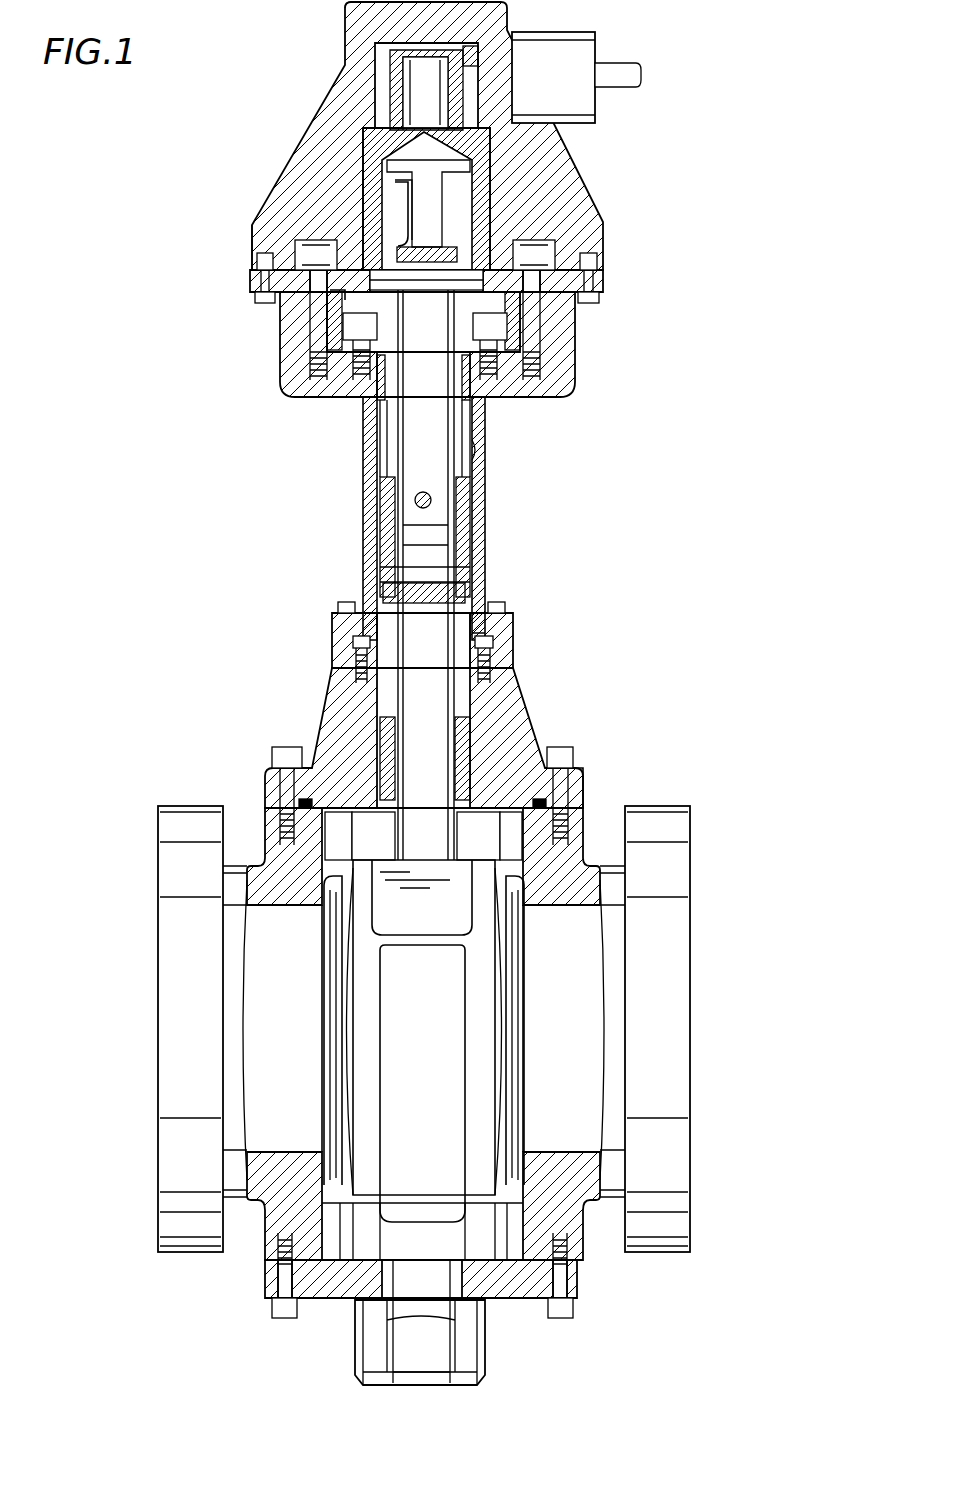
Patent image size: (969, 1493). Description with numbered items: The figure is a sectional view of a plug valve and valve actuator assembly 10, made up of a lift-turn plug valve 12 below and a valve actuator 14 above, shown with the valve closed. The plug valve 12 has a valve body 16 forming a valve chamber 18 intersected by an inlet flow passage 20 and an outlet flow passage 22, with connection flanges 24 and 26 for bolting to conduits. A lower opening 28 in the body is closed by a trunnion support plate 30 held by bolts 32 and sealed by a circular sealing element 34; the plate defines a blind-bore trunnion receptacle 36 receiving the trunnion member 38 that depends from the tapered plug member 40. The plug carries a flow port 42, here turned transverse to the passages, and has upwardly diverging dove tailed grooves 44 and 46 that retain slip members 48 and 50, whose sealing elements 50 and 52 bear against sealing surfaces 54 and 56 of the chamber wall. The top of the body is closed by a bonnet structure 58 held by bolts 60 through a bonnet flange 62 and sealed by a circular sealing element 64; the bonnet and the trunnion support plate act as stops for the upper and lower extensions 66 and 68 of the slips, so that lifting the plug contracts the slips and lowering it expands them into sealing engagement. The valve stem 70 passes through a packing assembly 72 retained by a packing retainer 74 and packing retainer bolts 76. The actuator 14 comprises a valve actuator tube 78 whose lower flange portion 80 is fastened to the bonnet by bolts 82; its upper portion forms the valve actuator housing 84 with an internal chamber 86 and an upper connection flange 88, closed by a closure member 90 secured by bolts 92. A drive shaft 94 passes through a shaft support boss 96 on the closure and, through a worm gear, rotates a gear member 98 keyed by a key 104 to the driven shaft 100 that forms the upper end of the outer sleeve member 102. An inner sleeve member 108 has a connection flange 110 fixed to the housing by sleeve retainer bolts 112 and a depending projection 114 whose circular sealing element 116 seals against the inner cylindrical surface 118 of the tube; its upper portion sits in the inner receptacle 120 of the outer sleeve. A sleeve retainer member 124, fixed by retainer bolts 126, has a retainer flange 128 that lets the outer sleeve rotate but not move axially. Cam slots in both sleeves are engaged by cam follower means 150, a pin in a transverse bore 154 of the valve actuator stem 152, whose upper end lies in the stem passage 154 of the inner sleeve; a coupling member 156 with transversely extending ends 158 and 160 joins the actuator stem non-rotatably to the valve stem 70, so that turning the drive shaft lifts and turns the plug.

The plug valve and valve actuator assembly 10 is at (170, 311).
The plug valve 12 is at (692, 724).
The valve actuator 14 is at (260, 34).
The valve body 16 is at (287, 1220).
The valve chamber 18 is at (560, 790).
The inlet flow passage 20 is at (245, 1145).
The outlet flow passage 22 is at (590, 1148).
The connection flange 24 is at (165, 852).
The connection flange 26 is at (645, 855).
The lower opening 28 is at (333, 1265).
The trunnion support plate 30 is at (535, 1295).
The bolts 32 is at (578, 1310).
The circular sealing element 34 is at (550, 1250).
The trunnion receptacle 36 is at (362, 1382).
The trunnion member 38 is at (425, 1295).
The tapered plug member 40 is at (480, 1262).
The flow port 42 is at (411, 1082).
The dove tailed groove 44 is at (360, 1213).
The dove tailed groove 46 is at (478, 1235).
The slip member 48 is at (340, 990).
The slip member / sealing element 50 is at (518, 985).
The sealing element 52 is at (497, 1038).
The sealing surface 54 is at (318, 922).
The sealing surface 56 is at (528, 928).
The bonnet structure 58 is at (505, 706).
The bolts 60 is at (562, 756).
The bonnet flange 62 is at (588, 800).
The circular sealing element 64 is at (286, 806).
The upper extension 66 is at (332, 803).
The lower extension 68 is at (345, 1265).
The valve stem 70 is at (432, 626).
The packing assembly 72 is at (478, 744).
The packing retainer 74 is at (466, 678).
The packing retainer bolts 76 is at (492, 633).
The valve actuator tube 78 is at (368, 505).
The lower flange portion 80 is at (333, 637).
The bolts 82 is at (340, 608).
The valve actuator housing 84 is at (562, 370).
The internal chamber 86 is at (310, 325).
The upper connection flange 88 is at (590, 282).
The closure member 90 is at (558, 187).
The bolts 92 is at (598, 300).
The drive shaft 94 is at (645, 75).
The shaft support boss 96 is at (572, 47).
The gear member 98 is at (470, 45).
The driven shaft 100 is at (420, 108).
The outer sleeve member 102 is at (378, 155).
The key 104 is at (365, 72).
The inner sleeve member 108 is at (470, 185).
The connection flange 110 is at (355, 392).
The sleeve retainer bolts 112 is at (535, 392).
The depending projection 114 is at (368, 400).
The circular sealing element 116 is at (492, 397).
The inner cylindrical surface 118 is at (478, 452).
The inner receptacle 120 is at (378, 246).
The sleeve retainer member 124 is at (545, 322).
The retainer bolts 126 is at (312, 352).
The retainer flange 128 is at (545, 272).
The cam follower means 150 is at (500, 250).
The valve actuator stem 152 is at (410, 448).
The internal stem passage / transverse bore 154 is at (395, 187).
The coupling member 156 is at (466, 537).
The transversely extending end 158 is at (415, 505).
The transversely extending end 160 is at (388, 575).